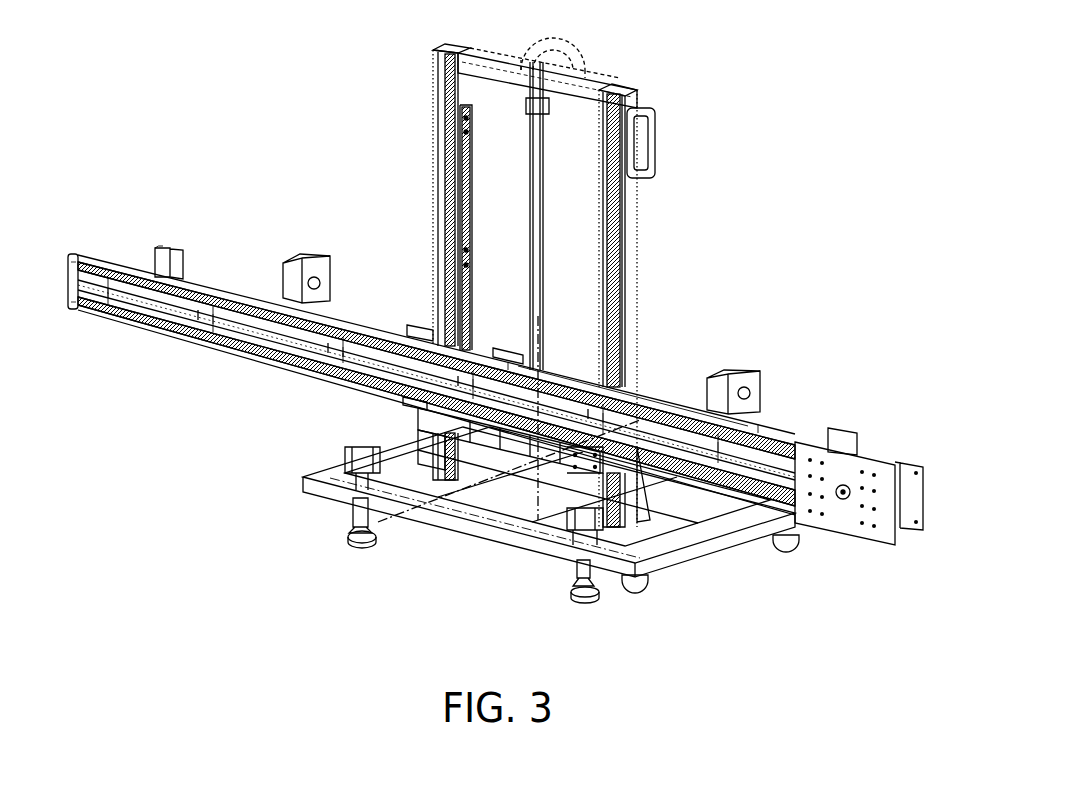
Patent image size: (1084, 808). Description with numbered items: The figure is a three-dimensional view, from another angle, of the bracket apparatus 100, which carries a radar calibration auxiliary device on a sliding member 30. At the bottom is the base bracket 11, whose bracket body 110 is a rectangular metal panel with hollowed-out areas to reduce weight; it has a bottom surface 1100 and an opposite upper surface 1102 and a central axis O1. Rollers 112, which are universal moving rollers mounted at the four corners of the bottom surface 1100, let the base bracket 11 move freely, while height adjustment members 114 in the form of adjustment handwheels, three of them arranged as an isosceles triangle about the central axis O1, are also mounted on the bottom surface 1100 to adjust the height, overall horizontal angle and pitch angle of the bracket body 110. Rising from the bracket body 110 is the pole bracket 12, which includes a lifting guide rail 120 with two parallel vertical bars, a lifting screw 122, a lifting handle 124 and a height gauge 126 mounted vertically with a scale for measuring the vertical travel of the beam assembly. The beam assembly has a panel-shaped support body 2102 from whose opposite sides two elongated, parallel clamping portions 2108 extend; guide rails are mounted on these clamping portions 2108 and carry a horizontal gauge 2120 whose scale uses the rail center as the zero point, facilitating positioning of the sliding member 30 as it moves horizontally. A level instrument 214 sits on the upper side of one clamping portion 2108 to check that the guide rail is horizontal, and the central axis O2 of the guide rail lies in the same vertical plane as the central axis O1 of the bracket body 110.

The bracket apparatus 100 is at (697, 211).
The base bracket 11 is at (757, 567).
The bracket body 110 is at (685, 557).
The roller 112 is at (642, 592).
The height adjustment member 114 is at (595, 602).
The bottom surface 1100 is at (318, 493).
The upper surface 1102 is at (317, 472).
The pole bracket 12 is at (362, 23).
The lifting guide rail 120 is at (434, 150).
The lifting screw 122 is at (540, 210).
The lifting handle 124 is at (557, 55).
The height gauge 126 is at (468, 250).
The level instrument 214 is at (505, 350).
The support body 2102 is at (578, 375).
The clamping portion 2108 is at (422, 332).
The horizontal gauge 2120 is at (758, 440).
The sliding member 30 is at (868, 470).
The central axis of the bracket body O1 is at (509, 484).
The central axis of the guide rail O2 is at (558, 418).